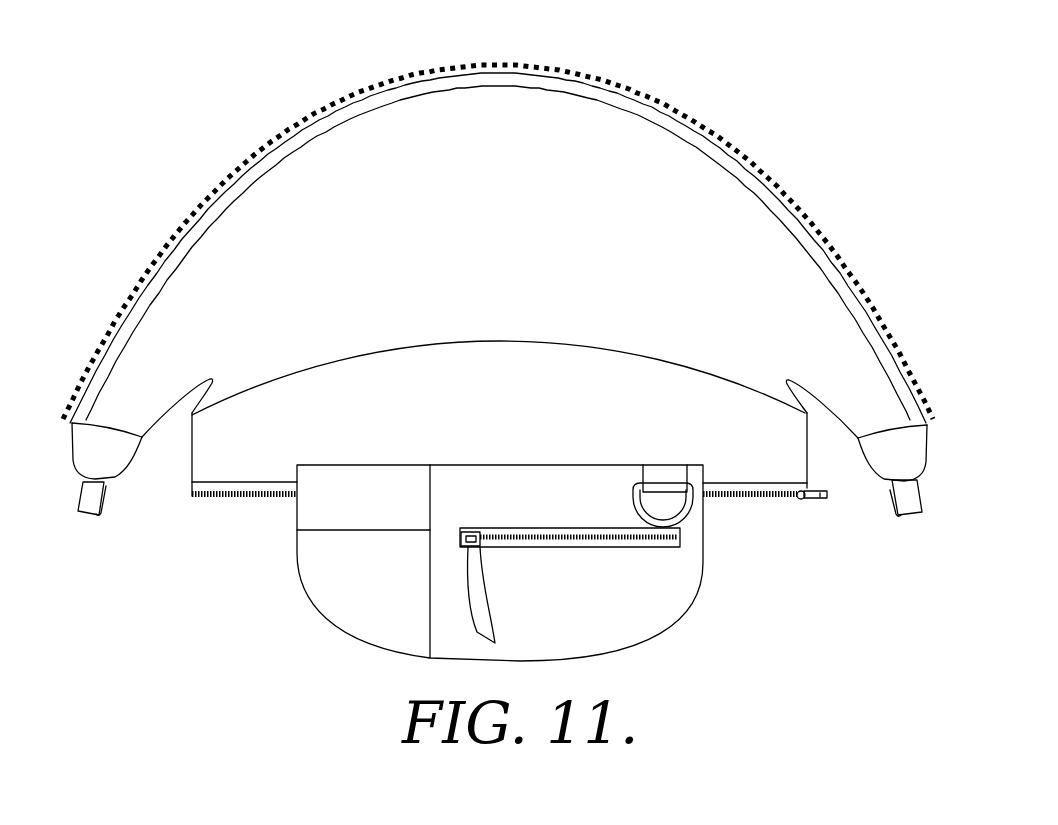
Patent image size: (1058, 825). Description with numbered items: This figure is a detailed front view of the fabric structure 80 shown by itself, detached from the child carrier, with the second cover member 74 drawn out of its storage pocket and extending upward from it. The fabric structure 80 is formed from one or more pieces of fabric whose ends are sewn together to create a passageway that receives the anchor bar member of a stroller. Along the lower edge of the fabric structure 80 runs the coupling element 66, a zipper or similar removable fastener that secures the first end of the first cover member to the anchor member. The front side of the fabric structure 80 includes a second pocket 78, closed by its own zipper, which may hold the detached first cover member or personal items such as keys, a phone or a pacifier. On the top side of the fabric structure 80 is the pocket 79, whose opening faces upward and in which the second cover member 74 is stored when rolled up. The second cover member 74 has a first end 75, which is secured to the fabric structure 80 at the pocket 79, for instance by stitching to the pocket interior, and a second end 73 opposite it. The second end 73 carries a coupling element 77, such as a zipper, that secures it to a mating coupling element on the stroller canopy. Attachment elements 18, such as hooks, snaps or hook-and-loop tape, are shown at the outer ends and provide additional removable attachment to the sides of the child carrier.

The second end 73 is at (685, 101).
The fabric structure 80 is at (750, 128).
The second cover member 74 is at (233, 240).
The coupling element 77 is at (807, 226).
The first end 75 is at (262, 378).
The pocket 79 is at (625, 351).
The attachment elements 18 is at (910, 517).
The coupling element 66 is at (787, 500).
The second pocket 78 is at (668, 545).